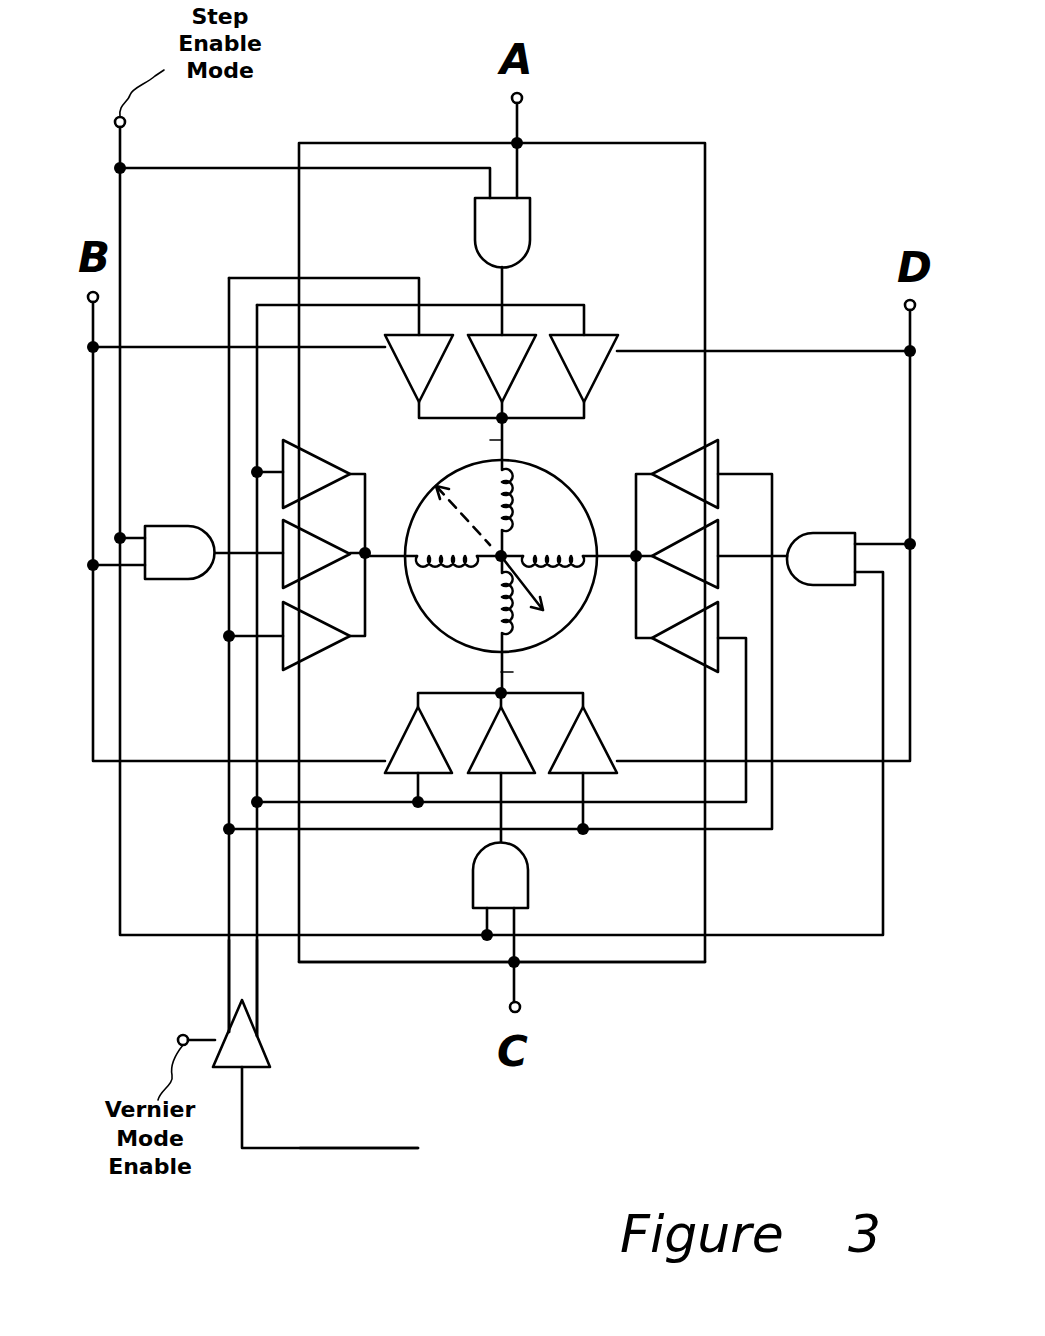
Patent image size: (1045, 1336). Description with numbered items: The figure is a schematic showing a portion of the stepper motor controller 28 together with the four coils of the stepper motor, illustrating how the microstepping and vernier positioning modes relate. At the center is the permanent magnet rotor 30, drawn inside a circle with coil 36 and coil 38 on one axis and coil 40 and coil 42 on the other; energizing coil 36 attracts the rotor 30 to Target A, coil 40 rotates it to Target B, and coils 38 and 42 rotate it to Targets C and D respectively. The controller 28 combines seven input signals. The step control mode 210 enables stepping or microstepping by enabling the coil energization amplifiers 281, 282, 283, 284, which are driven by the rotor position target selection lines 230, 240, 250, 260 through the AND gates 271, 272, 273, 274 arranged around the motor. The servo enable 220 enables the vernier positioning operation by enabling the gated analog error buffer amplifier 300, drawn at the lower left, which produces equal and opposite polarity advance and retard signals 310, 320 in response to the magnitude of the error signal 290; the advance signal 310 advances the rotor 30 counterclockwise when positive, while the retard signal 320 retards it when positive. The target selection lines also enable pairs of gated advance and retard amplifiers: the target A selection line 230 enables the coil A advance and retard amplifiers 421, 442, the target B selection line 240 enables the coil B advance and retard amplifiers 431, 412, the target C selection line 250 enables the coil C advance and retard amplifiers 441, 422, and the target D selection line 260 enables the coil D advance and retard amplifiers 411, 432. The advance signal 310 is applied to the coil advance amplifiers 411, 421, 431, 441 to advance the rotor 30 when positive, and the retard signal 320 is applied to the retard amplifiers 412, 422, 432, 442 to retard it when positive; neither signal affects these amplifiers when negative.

The stepper motor controller 28 is at (680, 1067).
The rotor 30 is at (428, 486).
The coil 36 is at (505, 532).
The coil 38 is at (492, 604).
The coil 40 is at (460, 550).
The coil 42 is at (540, 568).
The step control mode 210 is at (120, 148).
The servo enable 220 is at (183, 1036).
The target A selection line 230 is at (517, 124).
The target B selection line 240 is at (95, 318).
The target C selection line 250 is at (515, 988).
The target D selection line 260 is at (909, 330).
The AND gate 271 is at (530, 252).
The AND gate 272 is at (180, 526).
The AND gate 273 is at (556, 891).
The AND gate 274 is at (822, 533).
The coil energization amplifier 281 is at (520, 378).
The coil energization amplifier 282 is at (338, 527).
The coil energization amplifier 283 is at (480, 740).
The coil energization amplifier 284 is at (672, 546).
The error signal 290 is at (372, 1148).
The gated analog error buffer amplifier 300 is at (268, 1050).
The advance signal 310 is at (259, 986).
The retard signal 320 is at (228, 984).
The gated coil D advance amplifier 411 is at (604, 374).
The gated coil B retard amplifier 412 is at (400, 374).
The gated coil A advance amplifier 421 is at (350, 452).
The gated coil C retard amplifier 422 is at (322, 650).
The gated coil B advance amplifier 431 is at (398, 745).
The gated coil D retard amplifier 432 is at (622, 735).
The gated coil C advance amplifier 441 is at (678, 660).
The gated coil A retard amplifier 442 is at (672, 453).